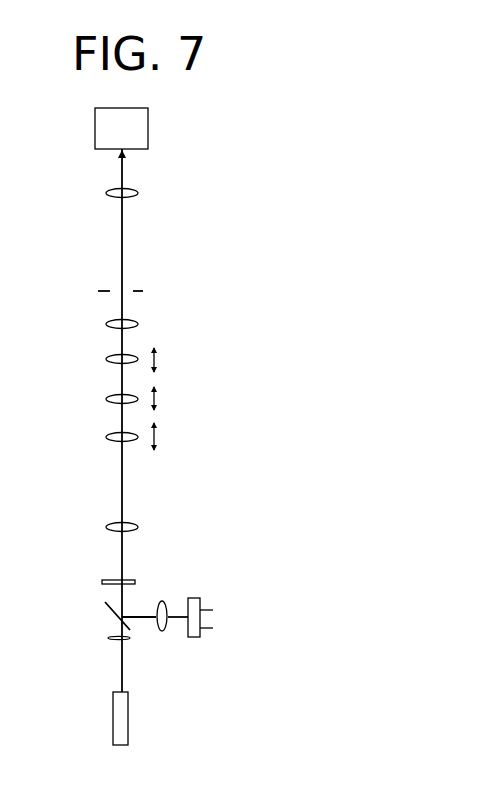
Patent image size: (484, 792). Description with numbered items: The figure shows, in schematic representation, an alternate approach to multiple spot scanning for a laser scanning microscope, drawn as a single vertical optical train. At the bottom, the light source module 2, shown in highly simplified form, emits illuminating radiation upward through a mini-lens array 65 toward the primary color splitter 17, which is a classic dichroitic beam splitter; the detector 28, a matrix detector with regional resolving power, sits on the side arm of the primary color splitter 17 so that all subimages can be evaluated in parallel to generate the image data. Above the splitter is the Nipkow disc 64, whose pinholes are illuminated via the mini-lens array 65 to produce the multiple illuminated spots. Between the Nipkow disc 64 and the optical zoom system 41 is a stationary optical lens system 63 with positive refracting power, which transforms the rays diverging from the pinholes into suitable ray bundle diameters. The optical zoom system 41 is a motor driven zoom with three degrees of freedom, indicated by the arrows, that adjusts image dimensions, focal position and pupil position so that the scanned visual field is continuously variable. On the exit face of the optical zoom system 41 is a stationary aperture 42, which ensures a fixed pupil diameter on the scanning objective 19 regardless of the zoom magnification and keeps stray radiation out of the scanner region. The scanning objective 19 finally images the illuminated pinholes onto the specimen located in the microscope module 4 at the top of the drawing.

The microscope module 4 is at (95, 128).
The scanning objective 19 is at (138, 192).
The stationary aperture 42 is at (143, 291).
The optical zoom system 41 is at (202, 307).
The stationary optical lens system 63 is at (138, 525).
The Nipkow disc 64 is at (102, 582).
The detector 28 is at (196, 598).
The primary color splitter 17 is at (110, 613).
The mini-lens array 65 is at (108, 638).
The light source module 2 is at (138, 737).